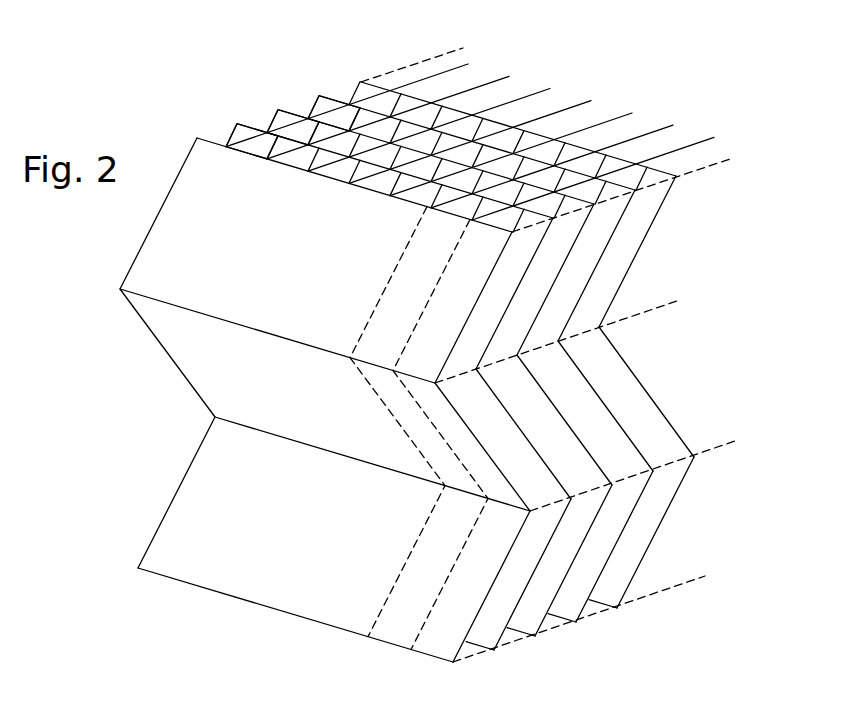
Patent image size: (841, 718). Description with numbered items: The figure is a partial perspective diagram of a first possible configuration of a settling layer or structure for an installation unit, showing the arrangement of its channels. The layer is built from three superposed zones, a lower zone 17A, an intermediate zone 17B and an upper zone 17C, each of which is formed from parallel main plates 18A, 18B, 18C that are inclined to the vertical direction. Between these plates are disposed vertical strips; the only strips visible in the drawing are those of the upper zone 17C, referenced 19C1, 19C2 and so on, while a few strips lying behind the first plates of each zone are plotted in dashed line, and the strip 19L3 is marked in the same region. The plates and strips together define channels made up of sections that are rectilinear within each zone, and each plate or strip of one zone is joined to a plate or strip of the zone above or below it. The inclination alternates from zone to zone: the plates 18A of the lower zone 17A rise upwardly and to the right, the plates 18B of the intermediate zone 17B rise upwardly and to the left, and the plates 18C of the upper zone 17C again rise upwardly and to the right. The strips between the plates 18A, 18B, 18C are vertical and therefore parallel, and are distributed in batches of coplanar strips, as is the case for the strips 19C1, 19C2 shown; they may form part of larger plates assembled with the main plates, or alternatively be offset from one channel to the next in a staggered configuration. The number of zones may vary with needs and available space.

The lower zone 17A is at (672, 522).
The intermediate zone 17B is at (657, 388).
The upper zone 17C is at (652, 247).
The main plates 18A is at (575, 542).
The main plates 18B is at (557, 410).
The main plates 18C is at (623, 213).
The vertical strip 19C1 is at (233, 128).
The vertical strip 19C2 is at (284, 117).
The cell line 3 19L3 is at (328, 106).